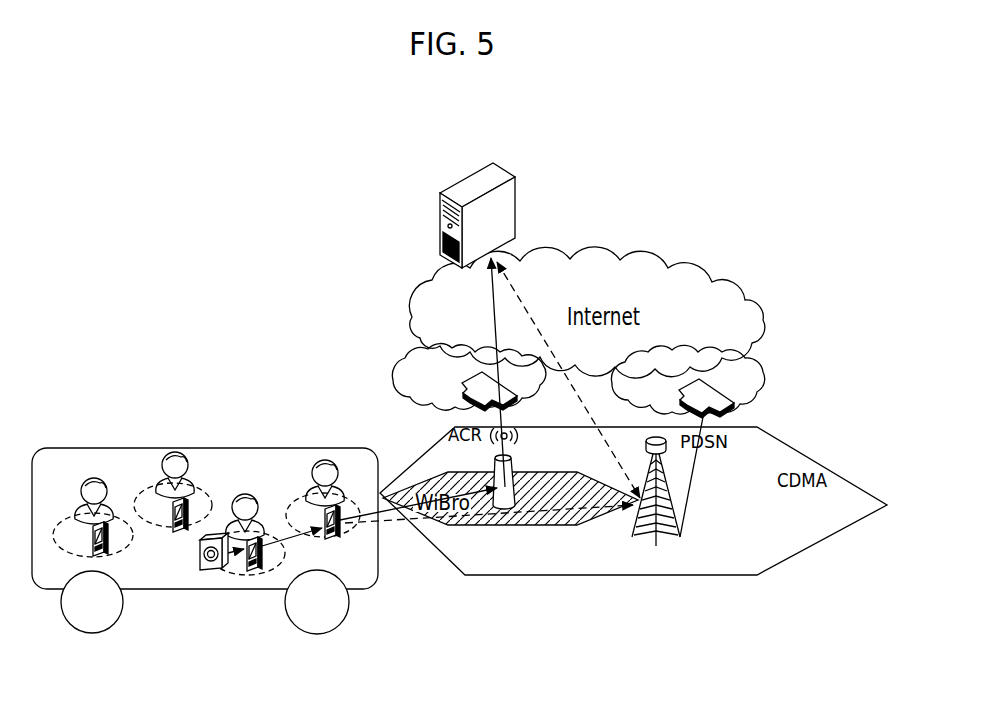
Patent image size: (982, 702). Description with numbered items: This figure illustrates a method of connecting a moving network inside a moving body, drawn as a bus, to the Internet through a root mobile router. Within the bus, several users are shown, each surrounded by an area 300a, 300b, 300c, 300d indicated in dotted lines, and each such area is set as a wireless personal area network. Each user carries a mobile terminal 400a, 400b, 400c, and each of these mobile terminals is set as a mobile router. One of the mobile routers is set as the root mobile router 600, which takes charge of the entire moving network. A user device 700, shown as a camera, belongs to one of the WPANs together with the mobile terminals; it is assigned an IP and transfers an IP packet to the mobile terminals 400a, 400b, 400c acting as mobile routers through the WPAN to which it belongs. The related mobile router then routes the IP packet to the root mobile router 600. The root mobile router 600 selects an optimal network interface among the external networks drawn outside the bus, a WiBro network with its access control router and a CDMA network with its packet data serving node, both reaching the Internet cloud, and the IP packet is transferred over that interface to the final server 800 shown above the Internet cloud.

The area 300a is at (55, 505).
The area 300b is at (120, 500).
The area 300c is at (225, 525).
The area 300d is at (350, 538).
The mobile terminal 400a is at (97, 560).
The mobile terminal 400b is at (180, 500).
The mobile terminal 400c is at (255, 575).
The root mobile router 600 is at (333, 507).
The user device 700 is at (203, 570).
The final server 800 is at (440, 218).